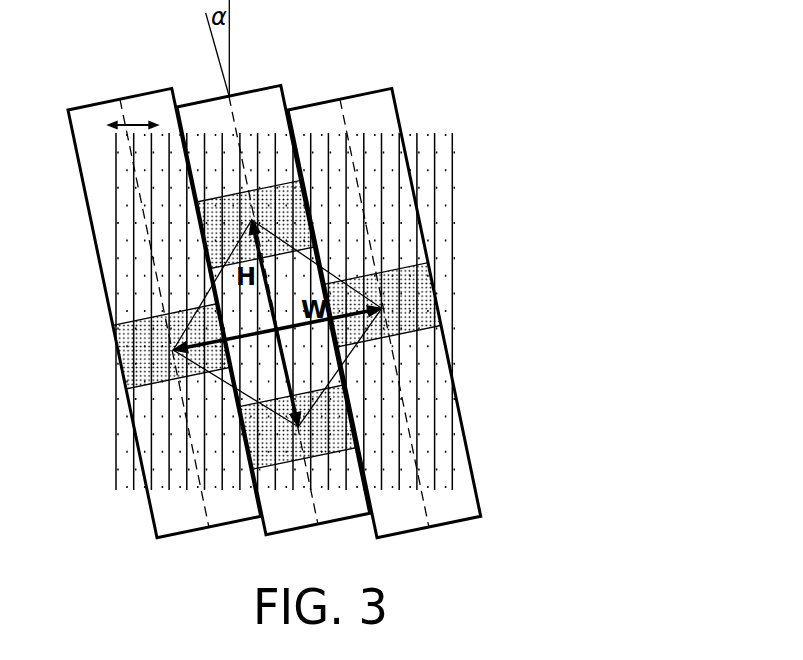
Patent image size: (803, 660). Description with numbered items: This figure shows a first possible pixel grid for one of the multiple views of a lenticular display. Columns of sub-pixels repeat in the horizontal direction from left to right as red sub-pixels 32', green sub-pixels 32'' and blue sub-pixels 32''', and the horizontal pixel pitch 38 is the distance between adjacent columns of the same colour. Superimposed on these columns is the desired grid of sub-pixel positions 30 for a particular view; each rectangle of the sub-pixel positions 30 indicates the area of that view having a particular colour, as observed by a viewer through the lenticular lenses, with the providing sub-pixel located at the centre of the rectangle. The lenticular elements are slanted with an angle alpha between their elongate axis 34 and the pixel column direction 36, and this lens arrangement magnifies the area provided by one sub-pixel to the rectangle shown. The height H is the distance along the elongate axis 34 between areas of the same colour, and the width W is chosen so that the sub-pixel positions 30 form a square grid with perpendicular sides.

The sub-pixel positions 30 is at (282, 200).
The red sub-pixels 32' is at (253, 335).
The green sub-pixels 32'' is at (277, 340).
The blue sub-pixels 32''' is at (286, 371).
The elongate axis 34 is at (216, 55).
The pixel column direction 36 is at (231, 34).
The horizontal pixel pitch 38 is at (132, 122).